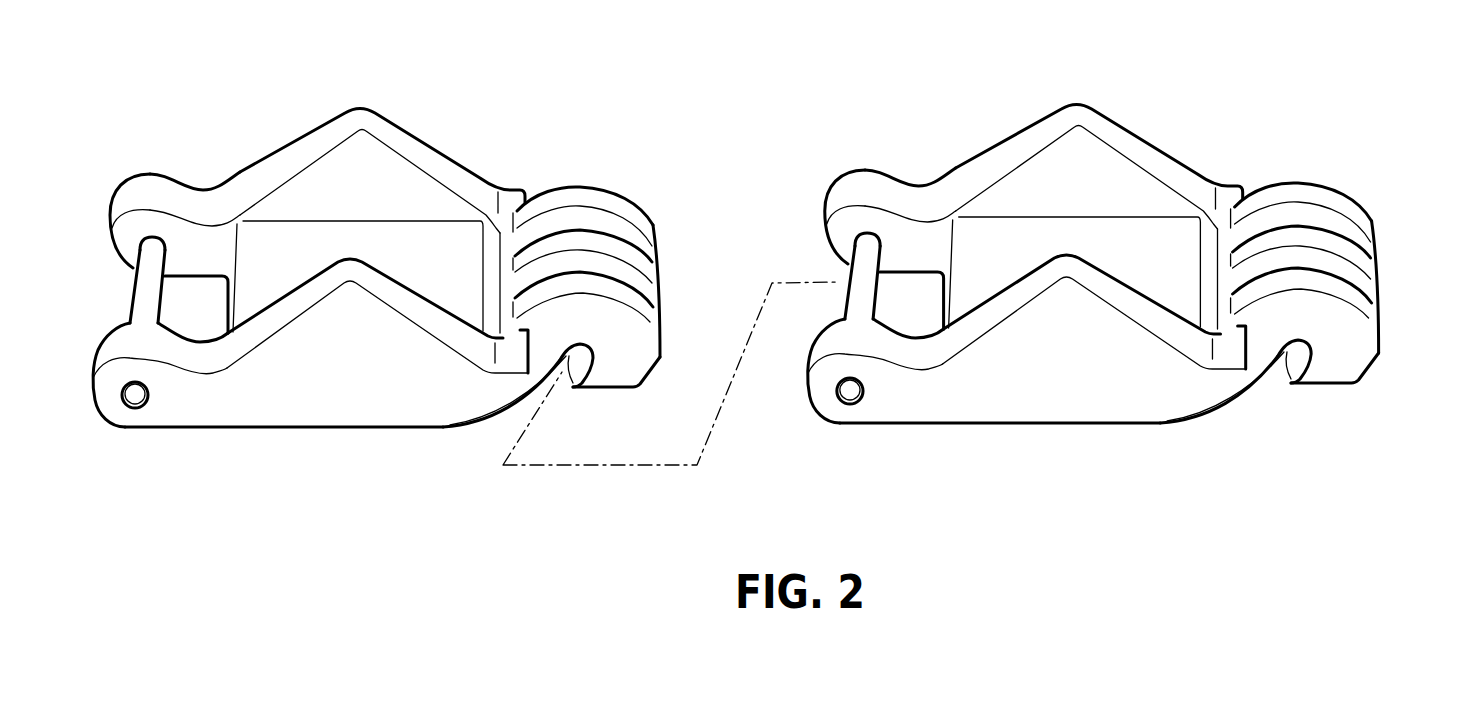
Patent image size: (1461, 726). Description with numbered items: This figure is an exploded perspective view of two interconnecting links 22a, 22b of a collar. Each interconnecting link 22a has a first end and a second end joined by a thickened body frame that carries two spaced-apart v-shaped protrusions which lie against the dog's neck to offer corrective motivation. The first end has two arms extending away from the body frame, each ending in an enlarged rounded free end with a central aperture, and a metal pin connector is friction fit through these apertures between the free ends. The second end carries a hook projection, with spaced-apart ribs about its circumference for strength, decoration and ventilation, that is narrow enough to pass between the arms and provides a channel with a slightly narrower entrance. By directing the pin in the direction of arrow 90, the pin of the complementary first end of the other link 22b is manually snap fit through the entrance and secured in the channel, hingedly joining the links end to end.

The interconnecting link 22a is at (347, 430).
The interconnecting link 22b is at (1033, 276).
The arrow 90 is at (597, 470).